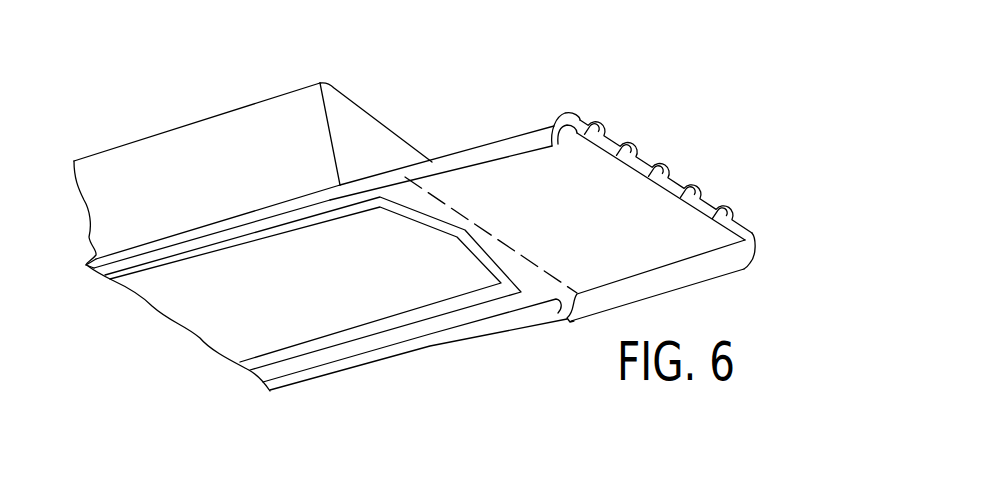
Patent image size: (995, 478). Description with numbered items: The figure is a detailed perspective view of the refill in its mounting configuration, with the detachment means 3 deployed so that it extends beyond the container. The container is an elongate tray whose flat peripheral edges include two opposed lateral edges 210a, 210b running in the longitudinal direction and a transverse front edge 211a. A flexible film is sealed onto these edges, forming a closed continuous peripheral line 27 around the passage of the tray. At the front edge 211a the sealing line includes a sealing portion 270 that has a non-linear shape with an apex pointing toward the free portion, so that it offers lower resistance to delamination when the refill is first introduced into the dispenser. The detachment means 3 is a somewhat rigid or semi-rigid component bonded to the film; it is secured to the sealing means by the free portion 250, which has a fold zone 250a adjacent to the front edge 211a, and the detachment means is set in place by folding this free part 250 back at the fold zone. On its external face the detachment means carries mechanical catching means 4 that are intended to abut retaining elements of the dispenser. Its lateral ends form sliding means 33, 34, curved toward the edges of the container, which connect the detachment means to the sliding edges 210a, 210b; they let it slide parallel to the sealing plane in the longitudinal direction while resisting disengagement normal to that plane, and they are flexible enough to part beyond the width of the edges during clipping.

The detachment means 3 is at (580, 104).
The mechanical catching means 4 is at (608, 134).
The closed continuous peripheral line 27 is at (297, 232).
The sliding means 33 is at (528, 145).
The sliding means 34 is at (712, 283).
The lateral edge 210a is at (185, 237).
The lateral edge 210b is at (453, 335).
The front edge 211a is at (365, 192).
The free portion 250 is at (707, 223).
The fold zone 250a is at (394, 199).
The sealing portion 270 is at (423, 217).